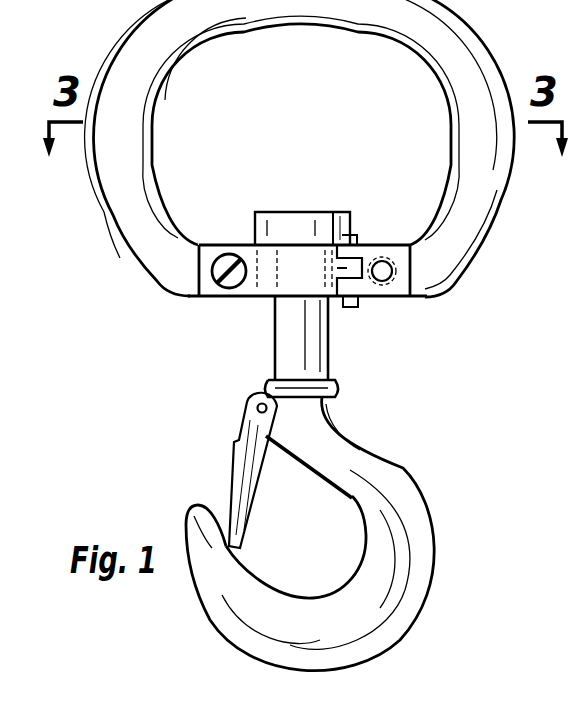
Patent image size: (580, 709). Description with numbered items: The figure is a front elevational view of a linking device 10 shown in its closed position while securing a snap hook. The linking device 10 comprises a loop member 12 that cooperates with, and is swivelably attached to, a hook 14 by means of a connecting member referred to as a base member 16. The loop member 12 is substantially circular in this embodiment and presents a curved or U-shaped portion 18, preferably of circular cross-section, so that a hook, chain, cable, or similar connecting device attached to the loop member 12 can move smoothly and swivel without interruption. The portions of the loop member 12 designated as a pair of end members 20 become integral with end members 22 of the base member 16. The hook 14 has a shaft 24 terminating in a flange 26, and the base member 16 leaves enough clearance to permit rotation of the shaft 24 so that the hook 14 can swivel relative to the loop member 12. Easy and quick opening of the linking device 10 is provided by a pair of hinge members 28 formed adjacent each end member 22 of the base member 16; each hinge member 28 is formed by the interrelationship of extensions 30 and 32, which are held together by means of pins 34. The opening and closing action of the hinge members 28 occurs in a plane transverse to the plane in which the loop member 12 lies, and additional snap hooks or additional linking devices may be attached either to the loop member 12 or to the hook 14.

The linking device 10 is at (118, 268).
The loop member 12 is at (114, 240).
The hook 14 is at (416, 464).
The base member 16 is at (394, 300).
The curved or U-shaped portion 18 is at (309, 28).
The end members 20 is at (195, 244).
The end members 22 is at (185, 297).
The shaft 24 is at (288, 349).
The flange 26 is at (255, 226).
The hinge members 28 is at (357, 298).
The extension 30 is at (327, 243).
The extension 32 is at (338, 268).
The pins 34 is at (331, 242).